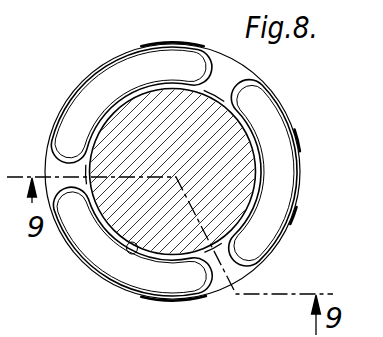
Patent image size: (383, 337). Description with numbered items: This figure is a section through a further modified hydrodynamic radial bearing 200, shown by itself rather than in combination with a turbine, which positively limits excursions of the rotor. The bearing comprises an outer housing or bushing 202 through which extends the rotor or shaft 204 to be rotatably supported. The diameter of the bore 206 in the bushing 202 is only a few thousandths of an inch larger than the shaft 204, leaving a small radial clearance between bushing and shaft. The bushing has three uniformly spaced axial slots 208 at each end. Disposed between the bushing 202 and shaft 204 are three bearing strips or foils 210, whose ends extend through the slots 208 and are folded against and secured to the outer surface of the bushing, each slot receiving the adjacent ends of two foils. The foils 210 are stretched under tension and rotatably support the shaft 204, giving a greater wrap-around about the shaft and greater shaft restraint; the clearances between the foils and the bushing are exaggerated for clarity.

The hydrodynamic radial bearing 200 is at (290, 96).
The bushing 202 is at (74, 94).
The shaft 204 is at (233, 169).
The bore 206 is at (122, 100).
The axial slots 208 is at (228, 82).
The bearing foils 210 is at (167, 55).